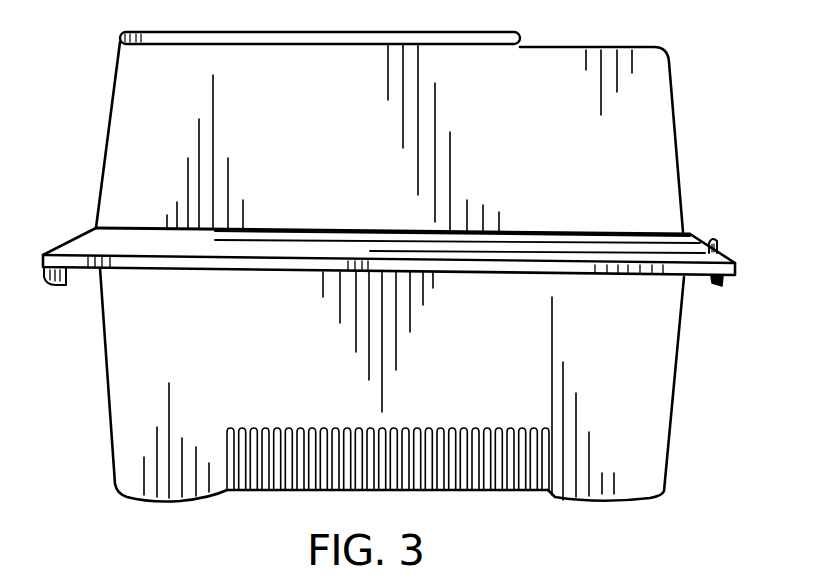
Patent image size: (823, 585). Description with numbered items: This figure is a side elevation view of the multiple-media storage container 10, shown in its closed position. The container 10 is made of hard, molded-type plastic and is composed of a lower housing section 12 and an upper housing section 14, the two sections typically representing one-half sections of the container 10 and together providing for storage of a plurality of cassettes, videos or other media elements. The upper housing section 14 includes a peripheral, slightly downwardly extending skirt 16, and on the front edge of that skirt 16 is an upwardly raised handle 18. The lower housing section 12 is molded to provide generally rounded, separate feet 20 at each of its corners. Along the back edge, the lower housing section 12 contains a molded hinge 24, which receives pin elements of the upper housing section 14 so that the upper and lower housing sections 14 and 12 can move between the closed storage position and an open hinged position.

The multiple-media storage container 10 is at (68, 100).
The lower housing section 12 is at (480, 370).
The upper housing section 14 is at (358, 198).
The skirt 16 is at (97, 226).
The handle 18 is at (714, 238).
The feet 20 is at (722, 285).
The hinge 24 is at (68, 283).